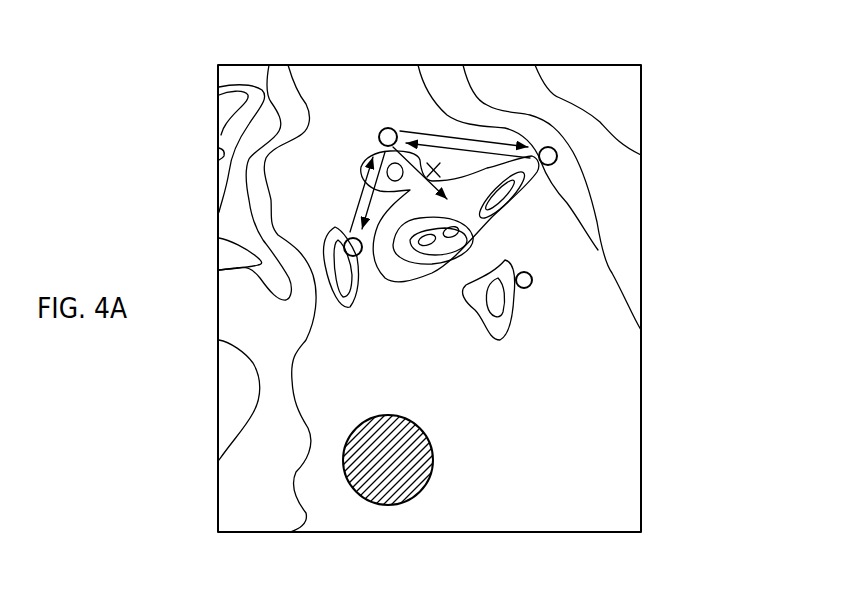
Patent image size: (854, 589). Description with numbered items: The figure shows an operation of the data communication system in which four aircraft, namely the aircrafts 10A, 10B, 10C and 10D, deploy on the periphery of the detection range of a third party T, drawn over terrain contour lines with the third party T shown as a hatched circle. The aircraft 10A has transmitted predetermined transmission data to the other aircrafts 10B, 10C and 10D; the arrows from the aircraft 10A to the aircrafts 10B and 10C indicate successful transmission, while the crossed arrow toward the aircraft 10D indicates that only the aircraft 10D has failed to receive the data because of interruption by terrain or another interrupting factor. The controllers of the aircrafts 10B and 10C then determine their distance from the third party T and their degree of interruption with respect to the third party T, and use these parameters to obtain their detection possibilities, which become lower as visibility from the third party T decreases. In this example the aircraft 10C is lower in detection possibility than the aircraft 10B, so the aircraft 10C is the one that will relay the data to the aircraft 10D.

The aircraft 10A is at (392, 128).
The aircraft 10B is at (346, 242).
The aircraft 10C is at (557, 151).
The aircraft 10D is at (532, 284).
The third party T is at (417, 496).